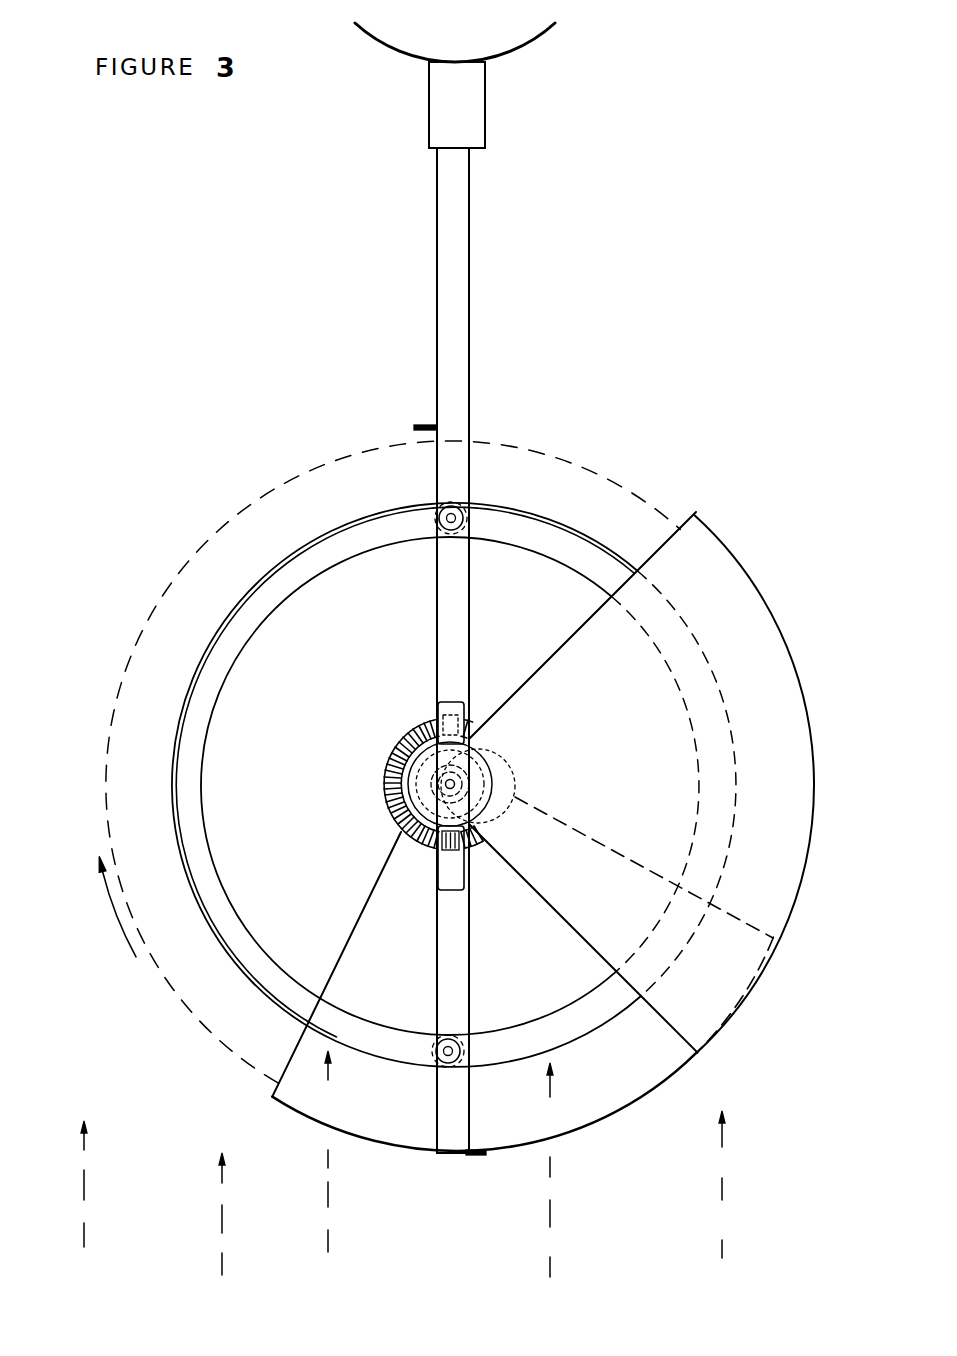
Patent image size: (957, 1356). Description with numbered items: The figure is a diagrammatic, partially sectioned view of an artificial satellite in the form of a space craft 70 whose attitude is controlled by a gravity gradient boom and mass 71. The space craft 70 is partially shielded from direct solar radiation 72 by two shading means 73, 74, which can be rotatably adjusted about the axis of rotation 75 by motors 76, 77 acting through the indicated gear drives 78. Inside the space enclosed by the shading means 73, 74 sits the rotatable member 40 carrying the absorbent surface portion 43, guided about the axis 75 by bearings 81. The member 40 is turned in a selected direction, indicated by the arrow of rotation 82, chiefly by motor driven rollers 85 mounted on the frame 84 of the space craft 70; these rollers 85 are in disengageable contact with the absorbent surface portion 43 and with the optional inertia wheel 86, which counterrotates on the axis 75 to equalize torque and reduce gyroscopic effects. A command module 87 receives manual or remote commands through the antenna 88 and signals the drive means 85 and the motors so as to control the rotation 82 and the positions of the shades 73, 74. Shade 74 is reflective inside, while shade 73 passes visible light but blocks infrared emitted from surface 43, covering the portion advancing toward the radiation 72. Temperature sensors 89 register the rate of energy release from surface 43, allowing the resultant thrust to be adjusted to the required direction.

The rotatable member 40 is at (175, 650).
The absorbent surface portion 43 is at (297, 548).
The space craft 70 is at (447, 375).
The boom and mass 71 is at (457, 200).
The direct solar radiation 72 is at (328, 1167).
The shading means 73 is at (657, 1062).
The shading means 74 is at (750, 597).
The axis of rotation 75 is at (456, 782).
The motor 76 is at (438, 710).
The motor 77 is at (453, 857).
The gear drives 78 is at (385, 797).
The bearings 81 is at (458, 778).
The rotation 82 is at (120, 937).
The frame 84 is at (452, 1132).
The motor driven rollers 85 is at (456, 512).
The inertia wheel 86 is at (552, 552).
The command module 87 is at (443, 102).
The antenna 88 is at (536, 40).
The temperature sensors 89 is at (424, 424).